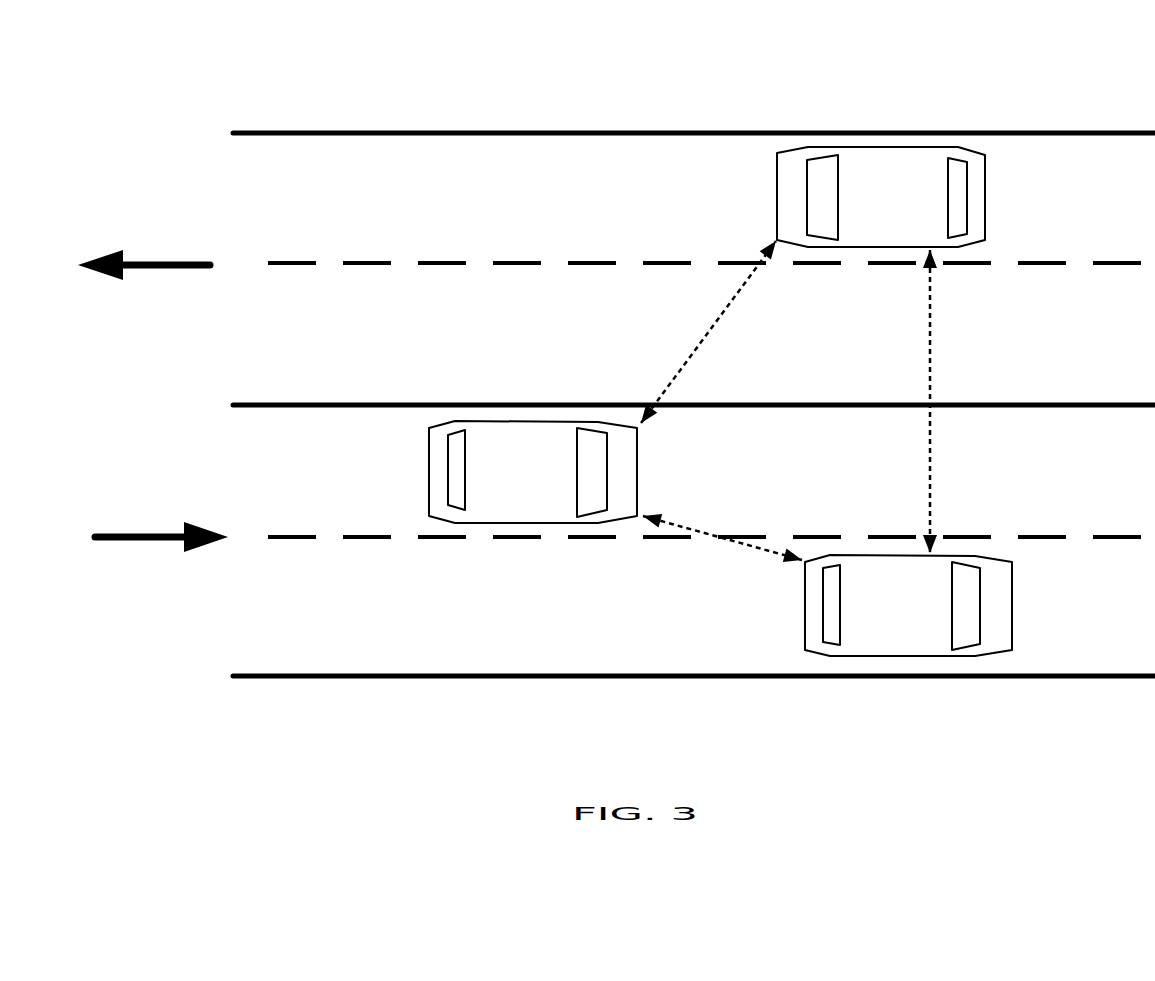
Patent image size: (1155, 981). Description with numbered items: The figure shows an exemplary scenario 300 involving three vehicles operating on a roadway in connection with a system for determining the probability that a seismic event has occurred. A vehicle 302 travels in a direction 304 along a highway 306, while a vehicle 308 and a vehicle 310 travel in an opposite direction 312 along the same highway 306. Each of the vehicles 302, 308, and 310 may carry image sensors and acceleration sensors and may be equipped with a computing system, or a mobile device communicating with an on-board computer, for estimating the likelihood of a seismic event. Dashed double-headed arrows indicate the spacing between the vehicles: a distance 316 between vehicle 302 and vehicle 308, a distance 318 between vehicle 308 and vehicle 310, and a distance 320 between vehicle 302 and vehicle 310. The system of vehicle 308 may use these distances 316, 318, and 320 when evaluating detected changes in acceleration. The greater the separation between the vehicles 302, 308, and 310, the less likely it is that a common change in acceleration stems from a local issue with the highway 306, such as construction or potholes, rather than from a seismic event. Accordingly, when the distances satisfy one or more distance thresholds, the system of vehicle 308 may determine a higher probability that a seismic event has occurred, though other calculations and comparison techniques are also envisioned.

The scenario 300 is at (1030, 74).
The vehicle 302 is at (843, 147).
The direction 304 is at (192, 262).
The highway 306 is at (393, 133).
The vehicle 308 is at (590, 421).
The vehicle 310 is at (965, 555).
The direction 312 is at (190, 527).
The distance 316 is at (717, 318).
The distance 318 is at (708, 535).
The distance 320 is at (933, 313).